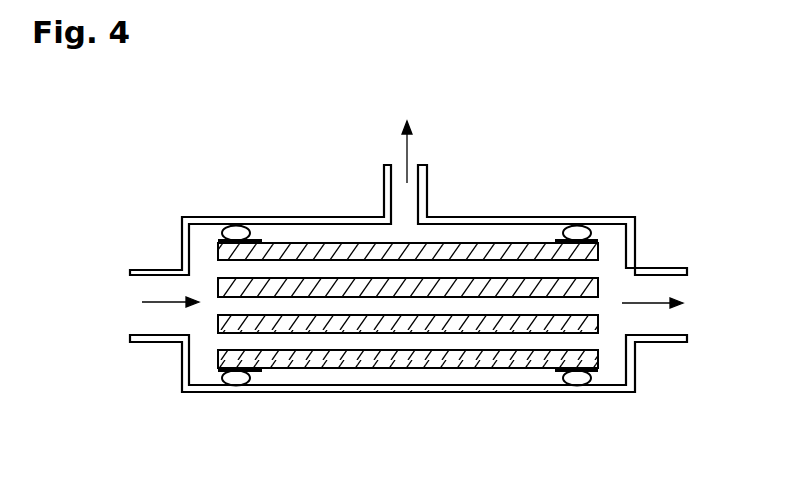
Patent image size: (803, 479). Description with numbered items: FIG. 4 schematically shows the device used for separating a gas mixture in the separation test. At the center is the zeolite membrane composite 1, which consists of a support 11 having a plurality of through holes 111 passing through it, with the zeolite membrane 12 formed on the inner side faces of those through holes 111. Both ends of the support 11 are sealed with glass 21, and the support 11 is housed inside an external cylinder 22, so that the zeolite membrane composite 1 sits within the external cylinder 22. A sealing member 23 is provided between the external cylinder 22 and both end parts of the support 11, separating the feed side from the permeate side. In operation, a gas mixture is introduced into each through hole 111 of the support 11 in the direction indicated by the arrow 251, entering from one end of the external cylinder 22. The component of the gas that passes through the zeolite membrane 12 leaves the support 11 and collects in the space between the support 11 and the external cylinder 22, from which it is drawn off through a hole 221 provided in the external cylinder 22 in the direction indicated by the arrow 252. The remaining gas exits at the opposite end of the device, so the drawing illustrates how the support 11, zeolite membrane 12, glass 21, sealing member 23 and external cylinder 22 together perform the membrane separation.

The zeolite membrane composite 1 is at (607, 342).
The support 11 is at (480, 368).
The through hole 111 is at (287, 306).
The zeolite membrane 12 is at (387, 297).
The glass 21 is at (220, 250).
The external cylinder 22 is at (525, 217).
The hole 221 is at (410, 202).
The sealing member 23 is at (235, 230).
The arrow 251 is at (152, 303).
The arrow 252 is at (400, 158).